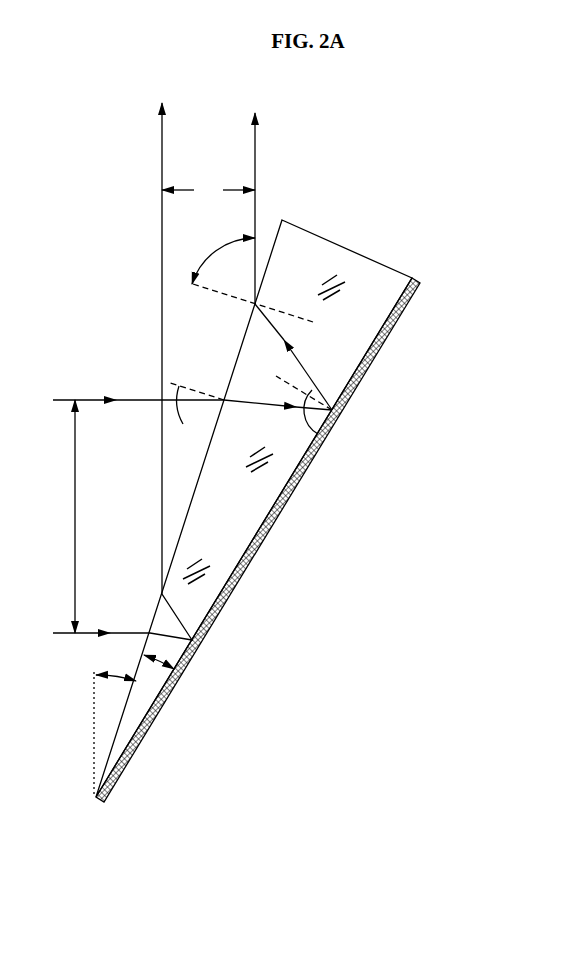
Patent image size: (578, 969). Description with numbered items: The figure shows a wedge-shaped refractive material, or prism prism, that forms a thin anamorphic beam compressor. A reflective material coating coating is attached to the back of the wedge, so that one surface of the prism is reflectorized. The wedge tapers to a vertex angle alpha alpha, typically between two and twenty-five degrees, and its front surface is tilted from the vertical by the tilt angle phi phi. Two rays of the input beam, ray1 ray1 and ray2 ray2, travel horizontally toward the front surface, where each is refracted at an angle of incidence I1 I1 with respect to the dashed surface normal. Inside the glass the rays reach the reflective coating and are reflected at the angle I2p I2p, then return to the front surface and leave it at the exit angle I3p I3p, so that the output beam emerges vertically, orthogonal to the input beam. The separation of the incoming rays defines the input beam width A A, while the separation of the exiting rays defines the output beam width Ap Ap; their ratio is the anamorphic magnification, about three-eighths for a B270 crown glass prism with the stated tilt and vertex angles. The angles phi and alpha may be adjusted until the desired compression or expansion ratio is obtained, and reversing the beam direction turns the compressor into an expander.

The wedge-shaped refractive material prism is at (254, 508).
The reflective material coating is at (246, 590).
The input beam ray ray1 is at (192, 261).
The input beam ray ray2 is at (122, 371).
The input beam width A is at (75, 516).
The output beam width Ap is at (208, 191).
The angle of incidence at first surface I1 is at (184, 382).
The angle of reflection at reflective surface I2p is at (311, 382).
The exit angle at first surface I3p is at (223, 261).
The tilt angle of surface 1 phi is at (116, 690).
The vertex angle alpha is at (159, 674).